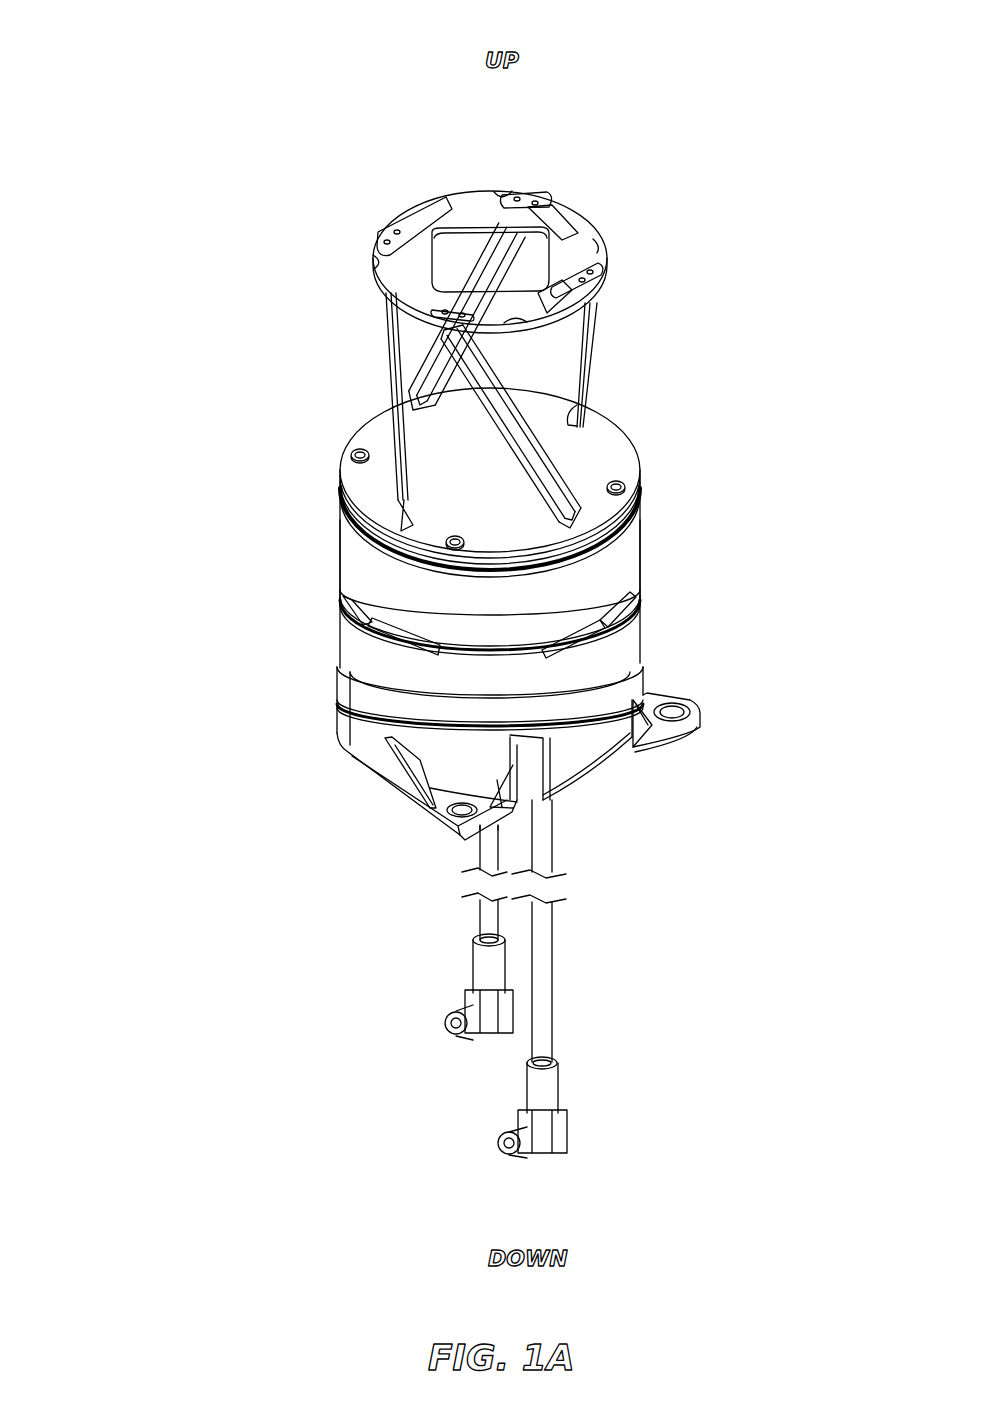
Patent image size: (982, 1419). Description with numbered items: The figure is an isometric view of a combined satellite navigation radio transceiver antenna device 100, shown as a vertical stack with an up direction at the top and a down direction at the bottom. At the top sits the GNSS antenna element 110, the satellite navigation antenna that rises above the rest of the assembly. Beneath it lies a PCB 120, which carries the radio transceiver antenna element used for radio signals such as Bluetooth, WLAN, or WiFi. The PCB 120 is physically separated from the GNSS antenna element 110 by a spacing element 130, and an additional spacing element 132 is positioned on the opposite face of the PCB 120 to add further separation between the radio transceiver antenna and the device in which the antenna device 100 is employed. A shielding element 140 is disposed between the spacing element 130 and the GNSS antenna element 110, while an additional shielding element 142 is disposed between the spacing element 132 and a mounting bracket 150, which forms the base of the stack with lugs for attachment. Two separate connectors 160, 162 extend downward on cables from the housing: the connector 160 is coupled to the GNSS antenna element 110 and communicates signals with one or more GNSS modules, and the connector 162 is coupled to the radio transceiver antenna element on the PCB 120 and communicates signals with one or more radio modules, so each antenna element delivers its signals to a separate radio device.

The combined satellite navigation radio transceiver antenna device 100 is at (221, 91).
The GNSS antenna element 110 is at (610, 370).
The PCB 120 is at (340, 600).
The spacing element 130 is at (640, 545).
The additional spacing element 132 is at (640, 622).
The shielding element 140 is at (340, 496).
The additional shielding element 142 is at (338, 683).
The mounting bracket 150 is at (677, 690).
The connector 160 is at (480, 962).
The connector 162 is at (547, 990).